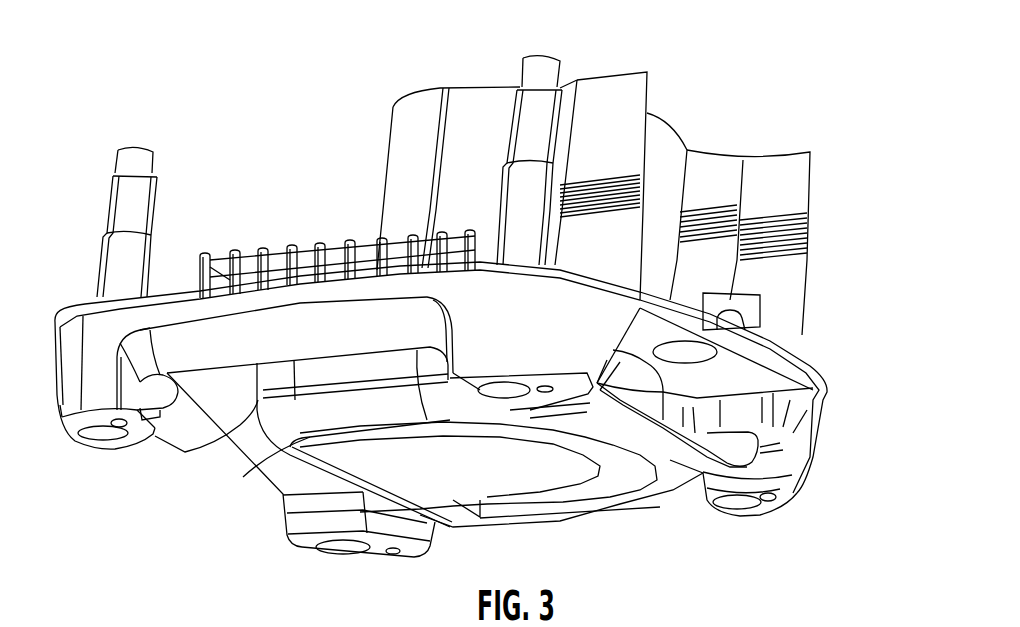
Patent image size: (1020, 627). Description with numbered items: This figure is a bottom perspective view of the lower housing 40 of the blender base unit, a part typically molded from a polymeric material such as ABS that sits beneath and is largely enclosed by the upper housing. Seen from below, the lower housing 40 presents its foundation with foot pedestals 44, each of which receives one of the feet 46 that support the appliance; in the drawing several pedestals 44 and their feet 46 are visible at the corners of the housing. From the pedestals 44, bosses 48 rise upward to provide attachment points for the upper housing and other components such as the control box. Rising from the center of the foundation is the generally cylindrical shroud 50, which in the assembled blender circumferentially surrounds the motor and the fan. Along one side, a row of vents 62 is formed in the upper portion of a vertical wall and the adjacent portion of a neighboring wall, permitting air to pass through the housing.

The lower housing 40 is at (839, 259).
The foot pedestals 44 is at (775, 503).
The feet 46 is at (738, 505).
The bosses 48 is at (139, 165).
The shroud 50 is at (490, 105).
The vents 62 is at (305, 258).